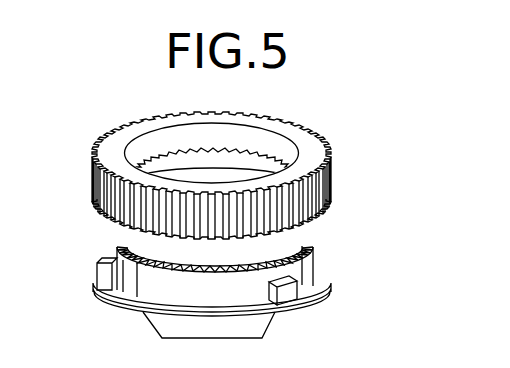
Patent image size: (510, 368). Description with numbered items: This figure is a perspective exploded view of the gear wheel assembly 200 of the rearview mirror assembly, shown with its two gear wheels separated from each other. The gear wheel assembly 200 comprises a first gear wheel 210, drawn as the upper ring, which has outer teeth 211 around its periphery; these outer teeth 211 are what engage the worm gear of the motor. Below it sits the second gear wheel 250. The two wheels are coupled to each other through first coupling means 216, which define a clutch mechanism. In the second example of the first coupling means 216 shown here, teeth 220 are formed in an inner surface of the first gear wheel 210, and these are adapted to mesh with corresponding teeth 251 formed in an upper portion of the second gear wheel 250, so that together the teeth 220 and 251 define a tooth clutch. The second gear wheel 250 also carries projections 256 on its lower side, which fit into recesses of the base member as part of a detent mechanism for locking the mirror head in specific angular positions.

The gear wheel assembly 200 is at (226, 221).
The first gear wheel 210 is at (212, 162).
The outer teeth 211 is at (93, 165).
The teeth 220 is at (167, 160).
The second gear wheel 250 is at (228, 298).
The teeth 251 is at (112, 240).
The first coupling means 216 is at (149, 273).
The projections 256 is at (157, 334).